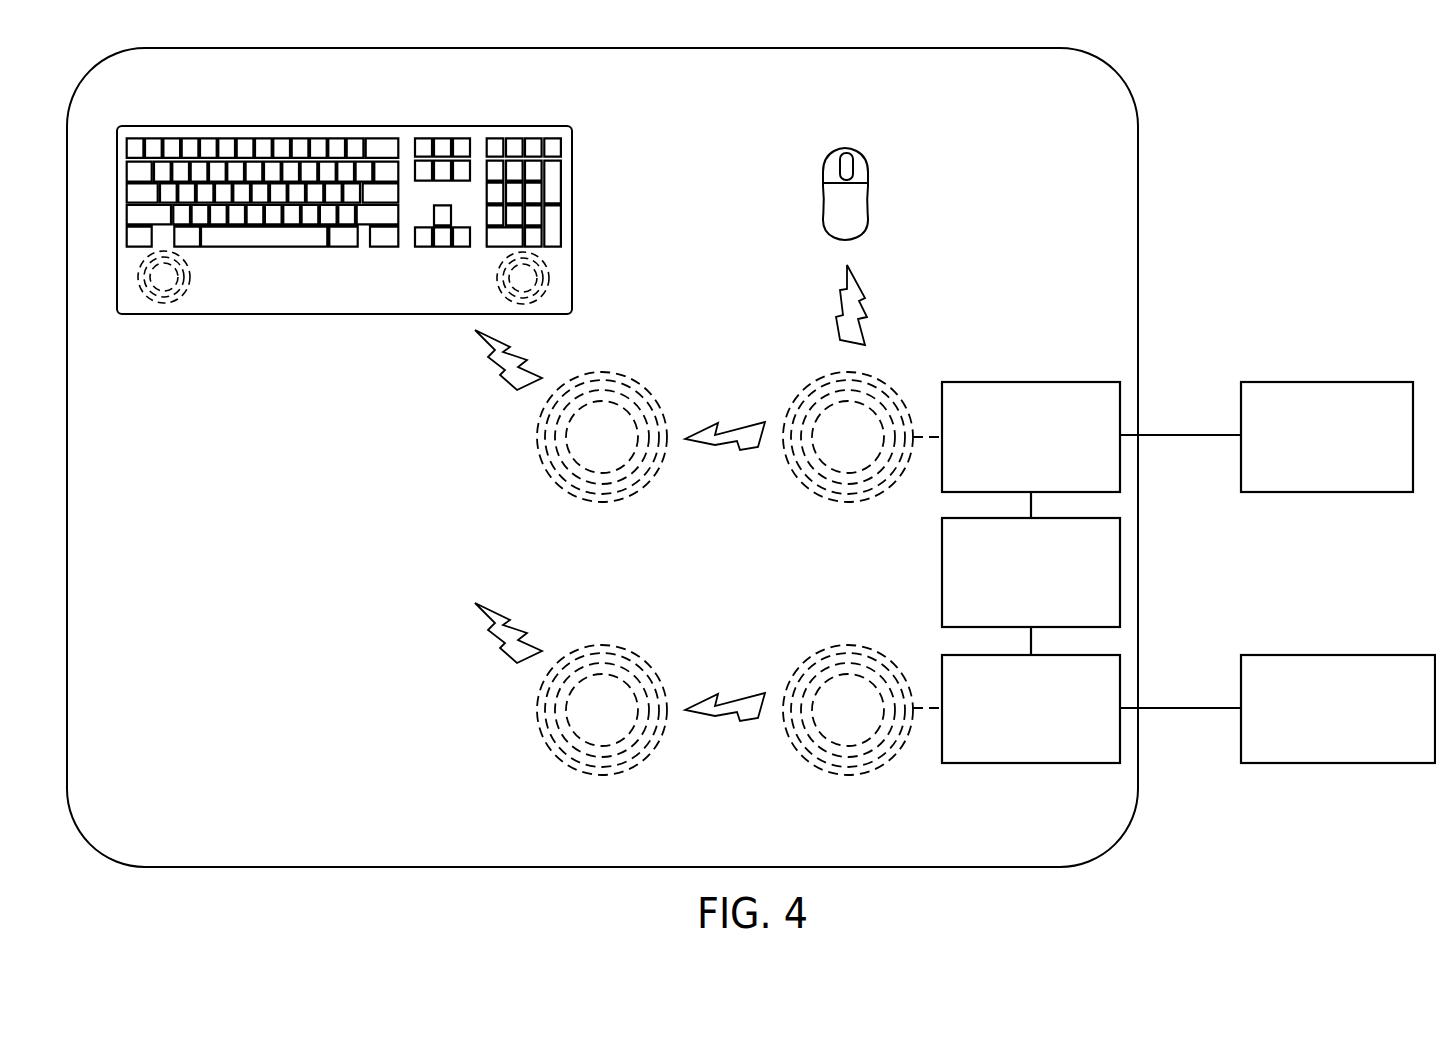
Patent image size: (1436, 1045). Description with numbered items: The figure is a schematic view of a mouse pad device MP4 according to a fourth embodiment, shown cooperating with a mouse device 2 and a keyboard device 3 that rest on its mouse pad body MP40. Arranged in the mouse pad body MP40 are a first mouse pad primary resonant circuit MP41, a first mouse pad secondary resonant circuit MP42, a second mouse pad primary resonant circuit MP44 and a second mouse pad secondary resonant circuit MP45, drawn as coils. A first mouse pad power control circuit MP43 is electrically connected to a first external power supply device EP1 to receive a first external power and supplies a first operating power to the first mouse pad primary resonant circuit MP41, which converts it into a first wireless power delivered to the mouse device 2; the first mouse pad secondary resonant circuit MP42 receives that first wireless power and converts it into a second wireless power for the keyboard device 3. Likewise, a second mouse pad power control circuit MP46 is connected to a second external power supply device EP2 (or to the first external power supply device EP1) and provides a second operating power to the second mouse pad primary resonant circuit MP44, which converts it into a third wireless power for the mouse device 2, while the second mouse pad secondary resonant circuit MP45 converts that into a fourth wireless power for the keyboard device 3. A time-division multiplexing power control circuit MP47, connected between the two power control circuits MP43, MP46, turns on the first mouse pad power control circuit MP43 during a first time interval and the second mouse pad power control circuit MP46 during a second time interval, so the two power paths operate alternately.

The mouse device 2 is at (851, 148).
The keyboard device 3 is at (343, 314).
The mouse pad body MP40 is at (656, 457).
The mouse pad device MP4 is at (1138, 212).
The first mouse pad primary resonant circuit MP41 is at (797, 480).
The first mouse pad secondary resonant circuit MP42 is at (550, 480).
The first mouse pad power control circuit MP43 is at (1115, 403).
The second mouse pad primary resonant circuit MP44 is at (797, 753).
The second mouse pad secondary resonant circuit MP45 is at (550, 753).
The second mouse pad power control circuit MP46 is at (1115, 738).
The time-division multiplexing power control circuit MP47 is at (1115, 575).
The first external power supply device EP1 is at (1328, 382).
The second external power supply device EP2 is at (1328, 655).